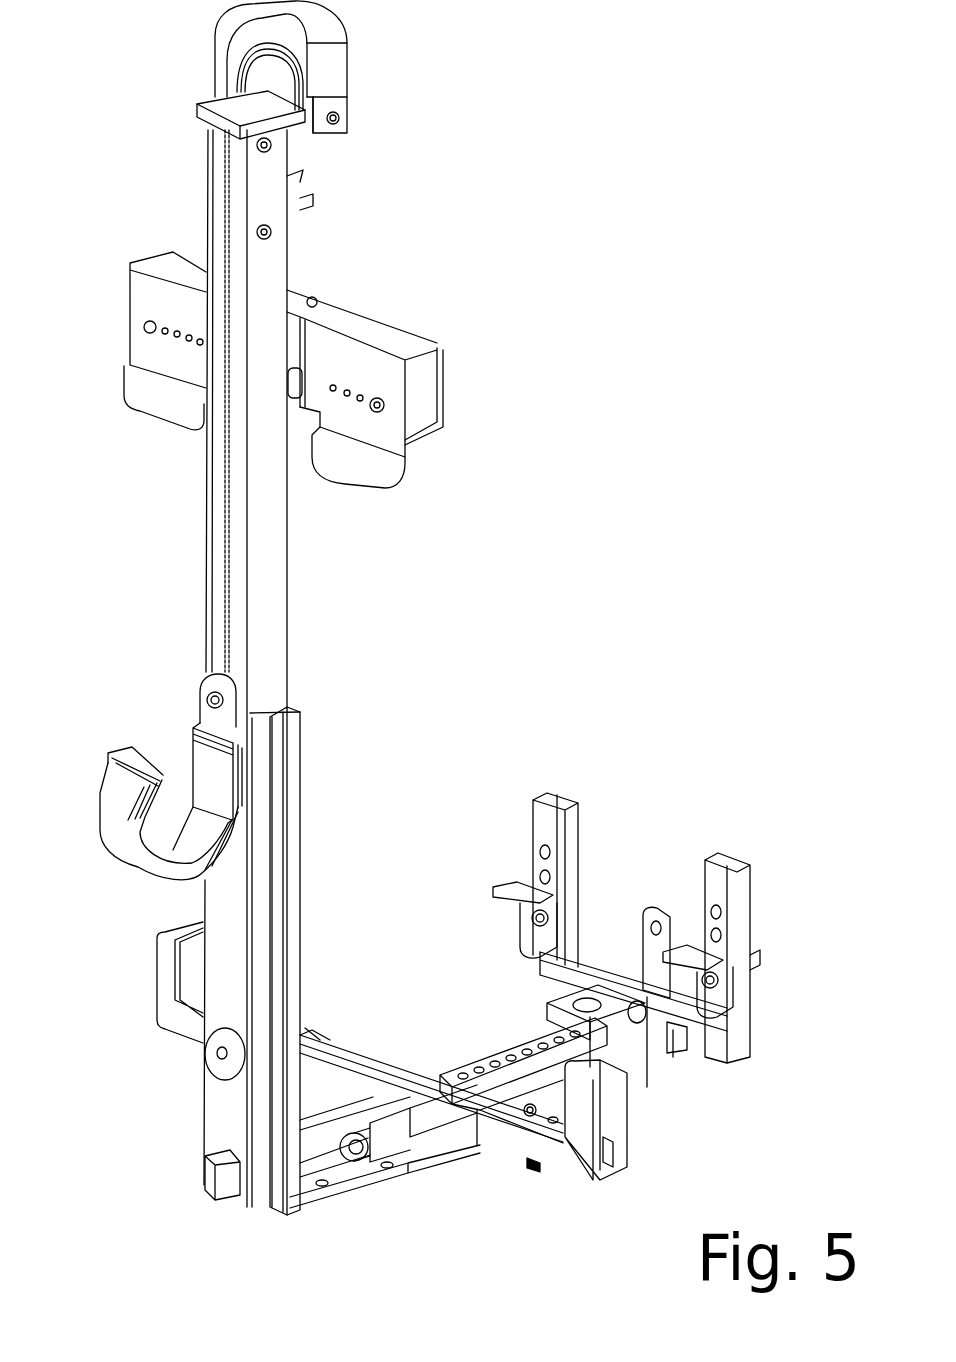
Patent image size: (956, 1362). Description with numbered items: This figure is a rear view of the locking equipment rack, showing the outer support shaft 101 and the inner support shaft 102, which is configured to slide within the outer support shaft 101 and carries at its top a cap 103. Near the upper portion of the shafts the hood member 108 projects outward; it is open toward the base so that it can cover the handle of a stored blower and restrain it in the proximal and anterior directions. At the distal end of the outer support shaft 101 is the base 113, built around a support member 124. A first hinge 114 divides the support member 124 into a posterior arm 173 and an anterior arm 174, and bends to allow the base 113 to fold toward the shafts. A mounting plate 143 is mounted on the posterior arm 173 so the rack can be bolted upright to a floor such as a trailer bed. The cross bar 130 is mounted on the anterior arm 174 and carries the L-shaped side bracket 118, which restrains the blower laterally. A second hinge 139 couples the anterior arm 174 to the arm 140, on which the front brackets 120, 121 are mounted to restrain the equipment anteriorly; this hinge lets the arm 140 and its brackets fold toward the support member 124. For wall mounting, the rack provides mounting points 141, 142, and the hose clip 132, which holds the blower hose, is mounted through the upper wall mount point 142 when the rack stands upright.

The outer support shaft 101 is at (300, 848).
The inner support shaft 102 is at (287, 578).
The cap 103 is at (229, 545).
The hood member 108 is at (432, 385).
The base 113 is at (408, 903).
The first hinge 114 is at (349, 1160).
The side bracket 118 is at (623, 1123).
The front bracket 120 is at (578, 808).
The front bracket 121 is at (725, 860).
The support member 124 is at (488, 1060).
The cross bar 130 is at (370, 1055).
The hose clip 132 is at (104, 808).
The second hinge 139 is at (628, 1012).
The arm 140 is at (640, 975).
The mounting point 141 is at (210, 1060).
The upper wall mount point 142 is at (213, 693).
The mounting plate 143 is at (332, 1197).
The posterior arm 173 is at (228, 1197).
The anterior arm 174 is at (407, 1138).